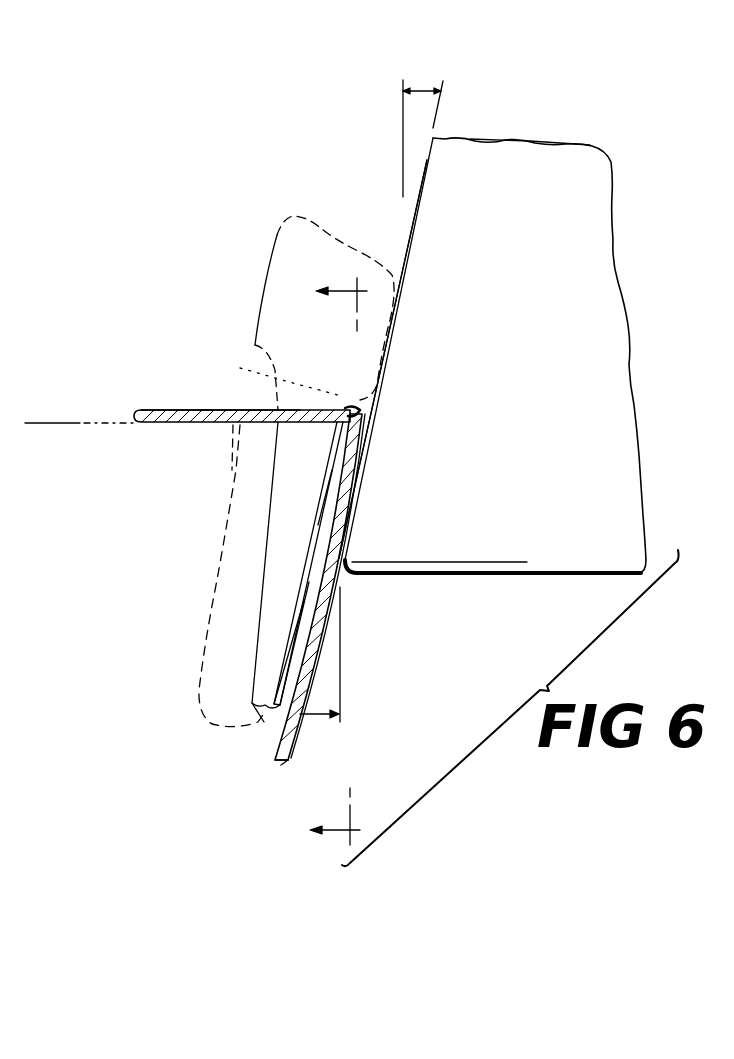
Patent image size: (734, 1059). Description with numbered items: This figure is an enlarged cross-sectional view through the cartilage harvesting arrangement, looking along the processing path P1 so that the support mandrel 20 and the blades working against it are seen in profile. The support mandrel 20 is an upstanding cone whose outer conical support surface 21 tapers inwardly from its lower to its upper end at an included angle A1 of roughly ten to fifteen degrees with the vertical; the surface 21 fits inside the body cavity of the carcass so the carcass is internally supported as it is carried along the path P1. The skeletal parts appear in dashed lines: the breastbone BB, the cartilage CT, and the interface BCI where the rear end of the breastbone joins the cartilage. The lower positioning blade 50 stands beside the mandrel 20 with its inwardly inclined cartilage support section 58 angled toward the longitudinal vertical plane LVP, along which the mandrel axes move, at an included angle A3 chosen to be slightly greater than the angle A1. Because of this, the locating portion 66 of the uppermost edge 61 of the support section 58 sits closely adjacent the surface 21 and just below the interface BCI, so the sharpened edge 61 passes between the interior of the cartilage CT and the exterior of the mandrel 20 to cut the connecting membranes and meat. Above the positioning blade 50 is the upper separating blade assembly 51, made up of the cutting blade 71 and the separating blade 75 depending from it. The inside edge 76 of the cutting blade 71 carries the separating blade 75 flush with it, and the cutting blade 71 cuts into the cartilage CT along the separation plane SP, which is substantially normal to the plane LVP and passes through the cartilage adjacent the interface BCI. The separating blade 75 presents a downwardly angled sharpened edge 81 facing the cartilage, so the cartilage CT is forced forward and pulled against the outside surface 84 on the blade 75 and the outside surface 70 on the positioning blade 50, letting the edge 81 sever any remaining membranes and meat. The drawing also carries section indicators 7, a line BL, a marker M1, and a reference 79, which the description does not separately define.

The support mandrel 20 is at (604, 256).
The outer conical support surface 21 is at (522, 152).
The lower positioning blade 50 is at (286, 763).
The upper separating blade assembly 51 is at (160, 409).
The cartilage support section 58 is at (269, 757).
The uppermost edge 61 is at (362, 444).
The locating portion 66 is at (353, 456).
The outside surface 70 is at (275, 736).
The cutting blade 71 is at (171, 422).
The separating blade 75 is at (278, 549).
The inside edge 76 is at (357, 410).
The plate top edge 79 is at (219, 410).
The downwardly angled edge 81 is at (345, 520).
The outside surface 84 is at (277, 513).
The included angle A1 is at (425, 88).
The included angle A3 is at (316, 722).
The breastbone BB is at (280, 266).
The interface BCI is at (256, 344).
The cartilage CT is at (200, 593).
The separation plane SP is at (76, 417).
The longitudinal vertical plane LVP is at (0, 151).
The base line BL is at (12, 296).
The processing path P1 is at (0, 551).
The point M1 is at (20, 613).
The section line 7- 7 is at (330, 561).